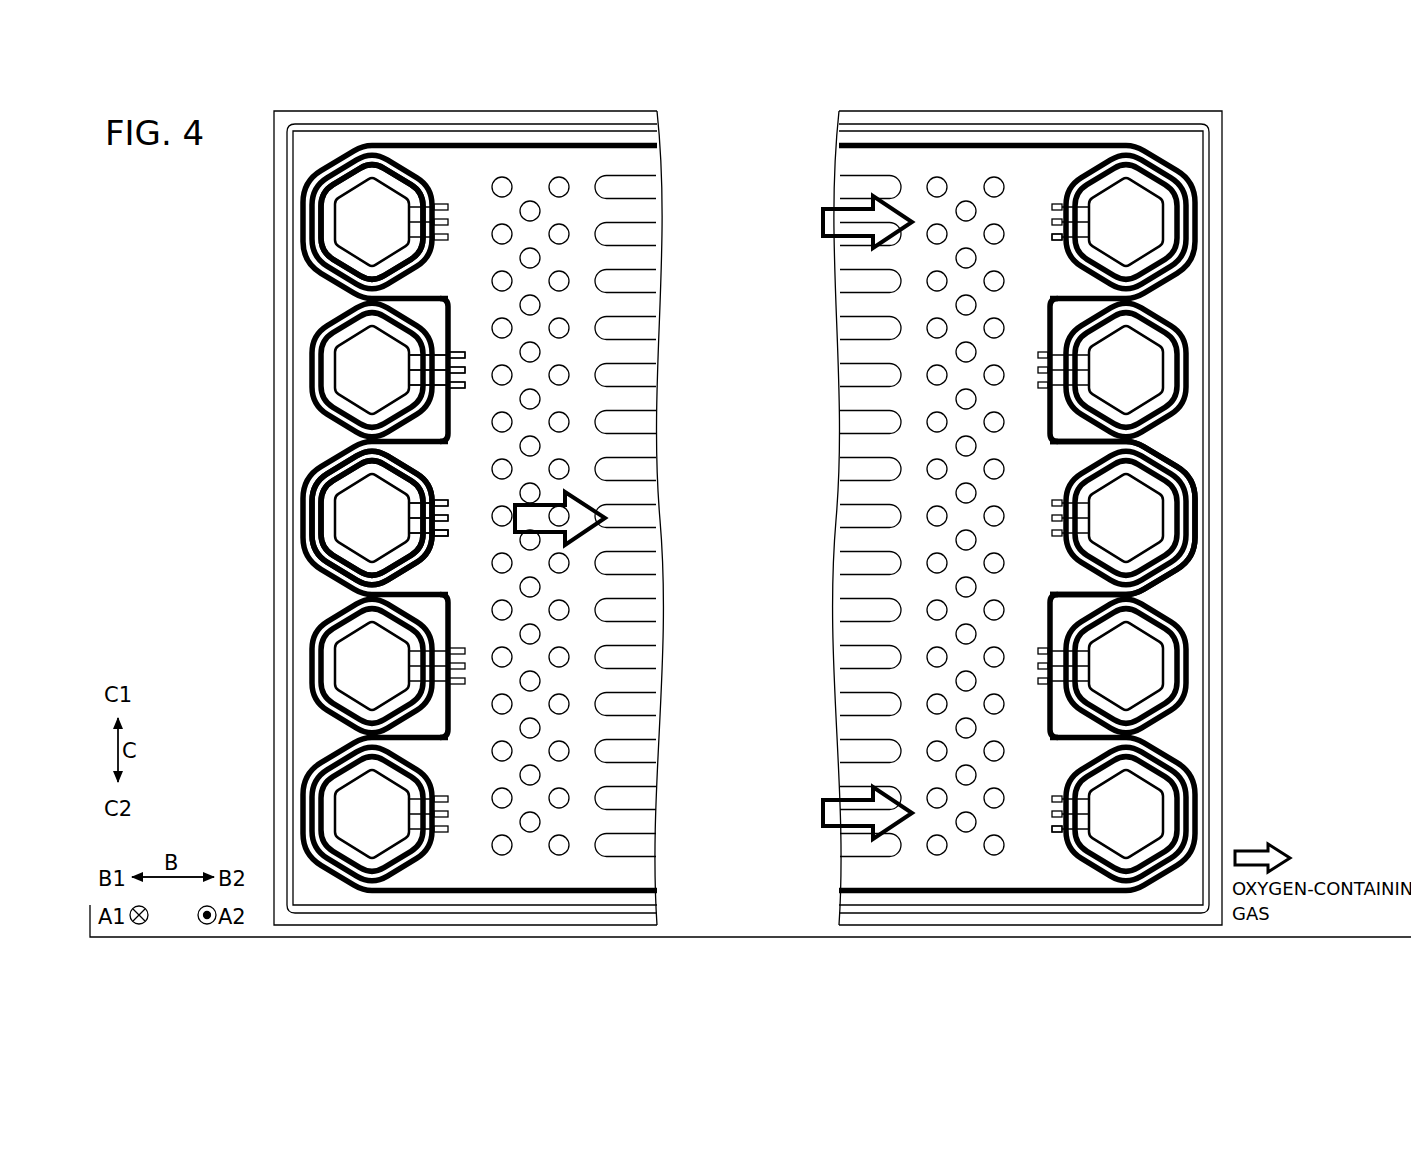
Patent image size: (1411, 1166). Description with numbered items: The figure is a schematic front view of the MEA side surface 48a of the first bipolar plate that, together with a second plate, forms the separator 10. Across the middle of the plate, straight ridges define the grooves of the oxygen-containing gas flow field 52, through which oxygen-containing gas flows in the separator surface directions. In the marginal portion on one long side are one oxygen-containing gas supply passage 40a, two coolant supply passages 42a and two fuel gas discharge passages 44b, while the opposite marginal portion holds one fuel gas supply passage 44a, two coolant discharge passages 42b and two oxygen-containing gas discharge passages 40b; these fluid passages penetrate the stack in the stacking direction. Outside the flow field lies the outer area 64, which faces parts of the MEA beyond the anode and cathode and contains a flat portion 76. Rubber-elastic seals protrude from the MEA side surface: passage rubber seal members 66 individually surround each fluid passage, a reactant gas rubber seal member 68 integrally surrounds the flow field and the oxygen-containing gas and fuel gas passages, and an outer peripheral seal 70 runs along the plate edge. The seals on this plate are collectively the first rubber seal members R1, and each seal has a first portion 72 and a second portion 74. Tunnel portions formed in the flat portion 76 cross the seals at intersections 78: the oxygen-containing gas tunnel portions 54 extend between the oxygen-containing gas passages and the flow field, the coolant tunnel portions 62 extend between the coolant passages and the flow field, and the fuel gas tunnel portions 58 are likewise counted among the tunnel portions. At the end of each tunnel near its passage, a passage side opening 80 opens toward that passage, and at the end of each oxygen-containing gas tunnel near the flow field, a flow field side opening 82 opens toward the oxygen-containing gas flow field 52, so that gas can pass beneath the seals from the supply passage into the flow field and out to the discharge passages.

The separator 10 is at (1385, 138).
The oxygen-containing gas flow field 52 is at (642, 827).
The oxygen-containing gas supply passage 40a is at (338, 502).
The oxygen-containing gas discharge passage 40b is at (1150, 220).
The coolant supply passage 42a is at (336, 355).
The coolant discharge passage 42b is at (1150, 337).
The fuel gas supply passage 44a is at (1150, 498).
The fuel gas discharge passage 44b is at (360, 206).
The MEA side surface 48a is at (298, 316).
The oxygen-containing gas tunnel portion 54 is at (442, 503).
The fuel gas tunnel portion 58 is at (441, 204).
The coolant tunnel portion 62 is at (466, 350).
The outer area 64 is at (310, 155).
The passage rubber seal member 66 is at (312, 244).
The reactant gas rubber seal member 68 is at (322, 462).
The outer peripheral seal 70 is at (288, 328).
The first portion 72 is at (340, 289).
The second portion 74 is at (450, 207).
The flat portion 76 is at (645, 163).
The intersection 78 is at (450, 225).
The passage side opening 80 is at (409, 224).
The flow field side opening 82 is at (442, 538).
The first rubber seal member R1 is at (1186, 468).